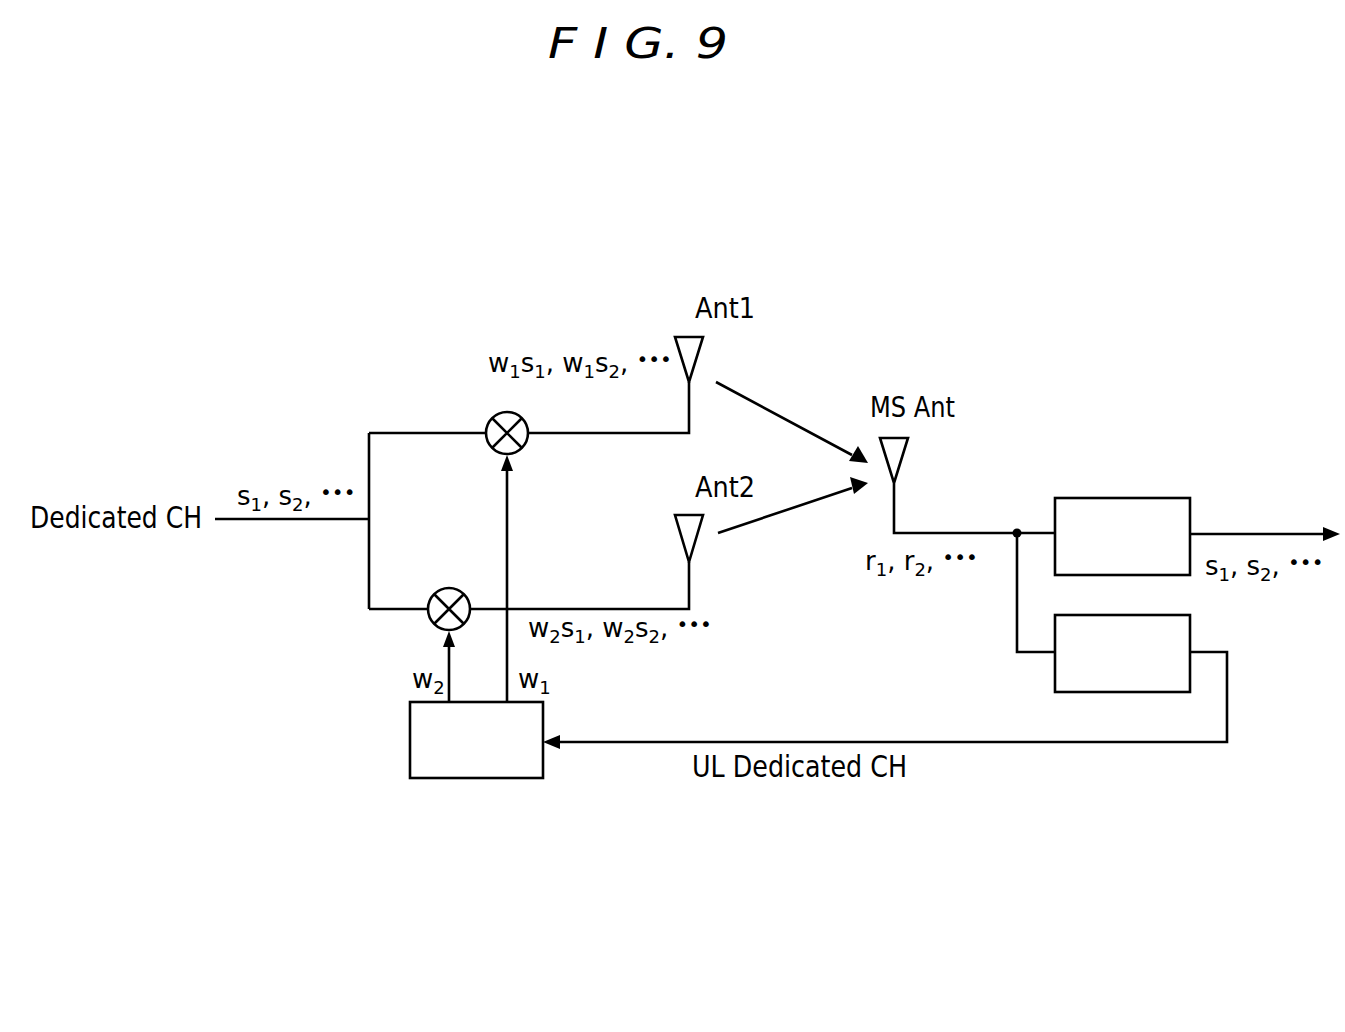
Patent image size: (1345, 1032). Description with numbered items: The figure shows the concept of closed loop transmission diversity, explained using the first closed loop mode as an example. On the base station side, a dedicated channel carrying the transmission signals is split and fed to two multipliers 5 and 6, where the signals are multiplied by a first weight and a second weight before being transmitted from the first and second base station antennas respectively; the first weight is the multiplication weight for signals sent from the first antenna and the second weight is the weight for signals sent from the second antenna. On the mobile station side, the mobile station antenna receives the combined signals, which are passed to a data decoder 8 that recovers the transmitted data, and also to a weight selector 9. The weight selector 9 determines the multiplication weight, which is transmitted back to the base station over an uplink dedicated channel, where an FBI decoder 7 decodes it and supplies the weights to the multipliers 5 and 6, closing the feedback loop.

The multiplier 5 is at (490, 420).
The multiplier 6 is at (449, 588).
The FBI decoder 7 is at (410, 741).
The data decoder 8 is at (1122, 498).
The weight selector 9 is at (1190, 632).